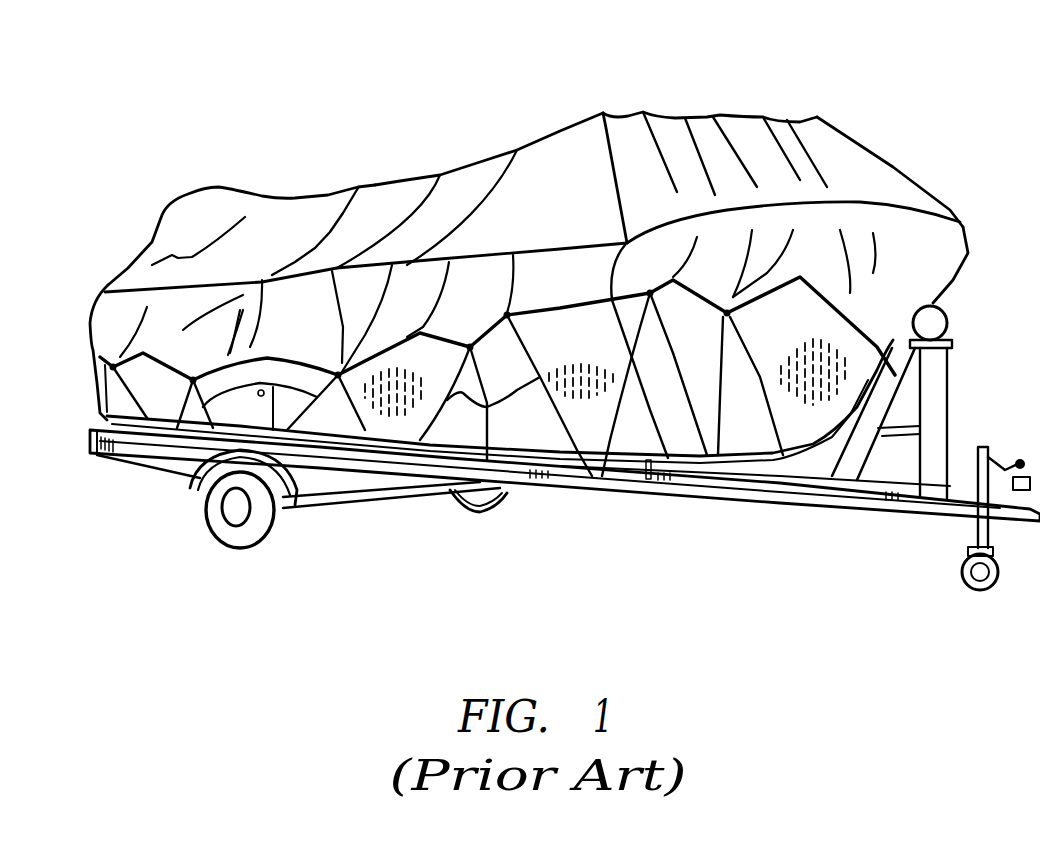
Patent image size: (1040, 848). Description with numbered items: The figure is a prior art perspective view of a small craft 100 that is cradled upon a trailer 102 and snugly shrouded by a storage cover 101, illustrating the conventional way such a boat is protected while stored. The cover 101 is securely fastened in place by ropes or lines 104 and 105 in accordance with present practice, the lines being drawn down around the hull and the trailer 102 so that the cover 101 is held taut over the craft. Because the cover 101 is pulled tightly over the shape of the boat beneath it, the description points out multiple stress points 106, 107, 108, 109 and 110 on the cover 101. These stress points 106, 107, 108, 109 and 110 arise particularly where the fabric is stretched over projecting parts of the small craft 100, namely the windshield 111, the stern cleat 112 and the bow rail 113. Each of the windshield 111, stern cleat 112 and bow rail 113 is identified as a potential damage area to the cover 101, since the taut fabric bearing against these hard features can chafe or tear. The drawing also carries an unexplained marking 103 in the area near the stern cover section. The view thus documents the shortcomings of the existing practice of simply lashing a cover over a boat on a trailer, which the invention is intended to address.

The small craft 100 is at (587, 420).
The cover 101 is at (558, 145).
The trailer 102 is at (137, 460).
The cover stern section 103 is at (823, 150).
The ropes or lines 104 is at (283, 523).
The ropes or lines 105 is at (487, 500).
The stress point 106 is at (643, 110).
The stress point 107 is at (815, 118).
The stress point 108 is at (763, 115).
The stress point 109 is at (602, 110).
The stress point 110 is at (100, 290).
The windshield 111 is at (885, 187).
The stern cleat 112 is at (148, 247).
The bow rail 113 is at (950, 212).